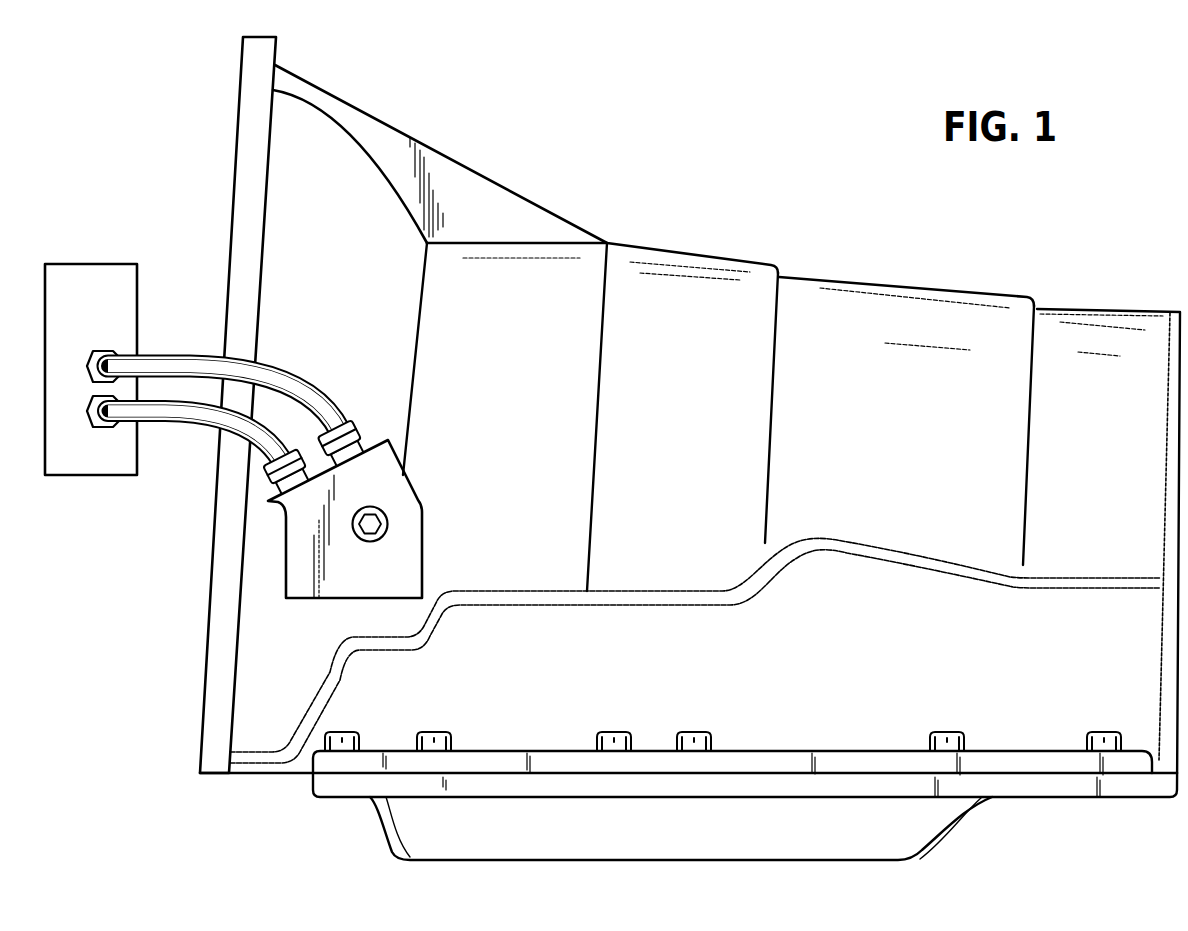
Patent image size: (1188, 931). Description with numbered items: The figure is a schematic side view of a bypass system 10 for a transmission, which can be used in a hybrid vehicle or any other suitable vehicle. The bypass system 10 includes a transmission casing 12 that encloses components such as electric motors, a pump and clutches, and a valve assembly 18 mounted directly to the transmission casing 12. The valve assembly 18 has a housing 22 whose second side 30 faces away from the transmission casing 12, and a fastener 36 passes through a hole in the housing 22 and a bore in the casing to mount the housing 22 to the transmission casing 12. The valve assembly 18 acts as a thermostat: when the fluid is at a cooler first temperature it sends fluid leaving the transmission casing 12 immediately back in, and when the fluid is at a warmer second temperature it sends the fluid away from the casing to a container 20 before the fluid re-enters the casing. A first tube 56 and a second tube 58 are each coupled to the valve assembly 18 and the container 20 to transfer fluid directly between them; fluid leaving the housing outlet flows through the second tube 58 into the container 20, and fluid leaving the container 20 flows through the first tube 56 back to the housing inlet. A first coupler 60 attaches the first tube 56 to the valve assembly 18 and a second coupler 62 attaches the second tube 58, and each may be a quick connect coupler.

The bypass system 10 is at (691, 182).
The transmission casing 12 is at (705, 267).
The valve assembly 18 is at (278, 544).
The container 20 is at (85, 283).
The housing 22 is at (407, 557).
The second side 30 is at (400, 480).
The fastener 36 is at (380, 524).
The first tube 56 is at (272, 373).
The second tube 58 is at (210, 417).
The first coupler 60 is at (380, 440).
The second coupler 62 is at (280, 488).